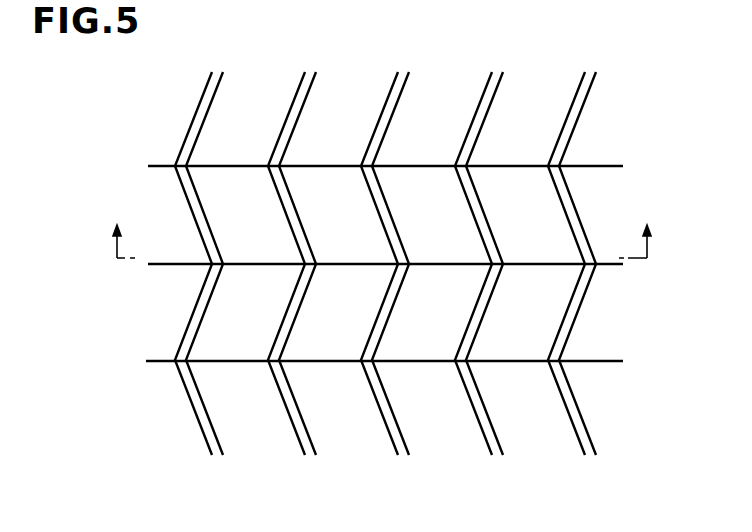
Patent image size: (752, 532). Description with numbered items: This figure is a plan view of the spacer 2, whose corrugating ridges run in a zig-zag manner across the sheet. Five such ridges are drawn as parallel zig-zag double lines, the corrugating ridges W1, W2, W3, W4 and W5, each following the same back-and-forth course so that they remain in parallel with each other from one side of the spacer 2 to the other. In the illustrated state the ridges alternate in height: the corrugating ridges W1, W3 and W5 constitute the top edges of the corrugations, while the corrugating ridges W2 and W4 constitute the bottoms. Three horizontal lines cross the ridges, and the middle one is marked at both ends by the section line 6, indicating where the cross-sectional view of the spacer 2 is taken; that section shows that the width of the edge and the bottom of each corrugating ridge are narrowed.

The spacer 2 is at (404, 288).
The section line 6— 6 is at (385, 240).
The corrugating ridge W1 is at (218, 457).
The corrugating ridge W2 is at (311, 457).
The corrugating ridge W3 is at (404, 457).
The corrugating ridge W4 is at (498, 457).
The corrugating ridge W5 is at (591, 457).